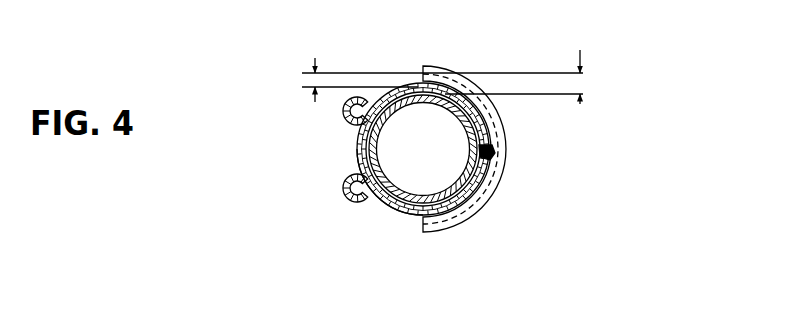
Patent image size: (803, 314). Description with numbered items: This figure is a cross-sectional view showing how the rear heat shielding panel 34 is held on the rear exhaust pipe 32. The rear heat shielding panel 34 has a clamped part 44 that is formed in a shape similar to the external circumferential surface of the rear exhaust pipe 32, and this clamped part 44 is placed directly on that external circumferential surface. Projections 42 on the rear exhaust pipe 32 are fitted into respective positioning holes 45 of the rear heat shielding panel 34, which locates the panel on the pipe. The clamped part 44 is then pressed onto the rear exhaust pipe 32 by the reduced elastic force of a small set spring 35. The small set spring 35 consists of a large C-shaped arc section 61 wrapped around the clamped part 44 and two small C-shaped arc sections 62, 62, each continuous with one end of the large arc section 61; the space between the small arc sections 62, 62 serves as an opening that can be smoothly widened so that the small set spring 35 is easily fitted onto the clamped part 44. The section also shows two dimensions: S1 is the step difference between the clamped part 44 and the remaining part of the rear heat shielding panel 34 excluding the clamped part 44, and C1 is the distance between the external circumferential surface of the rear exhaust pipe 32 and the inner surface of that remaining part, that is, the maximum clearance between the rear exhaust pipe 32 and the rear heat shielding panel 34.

The rear exhaust pipe 32 is at (369, 149).
The rear heat shielding panel 34 is at (508, 177).
The small set spring 35 is at (393, 214).
The projection 42 is at (494, 147).
The clamped part 44 is at (481, 208).
The positioning hole 45 is at (484, 149).
The large C-shaped arc section 61 is at (412, 218).
The small C-shaped arc section 62 is at (341, 125).
The step difference S1 is at (424, 76).
The maximum clearance C1 is at (540, 77).